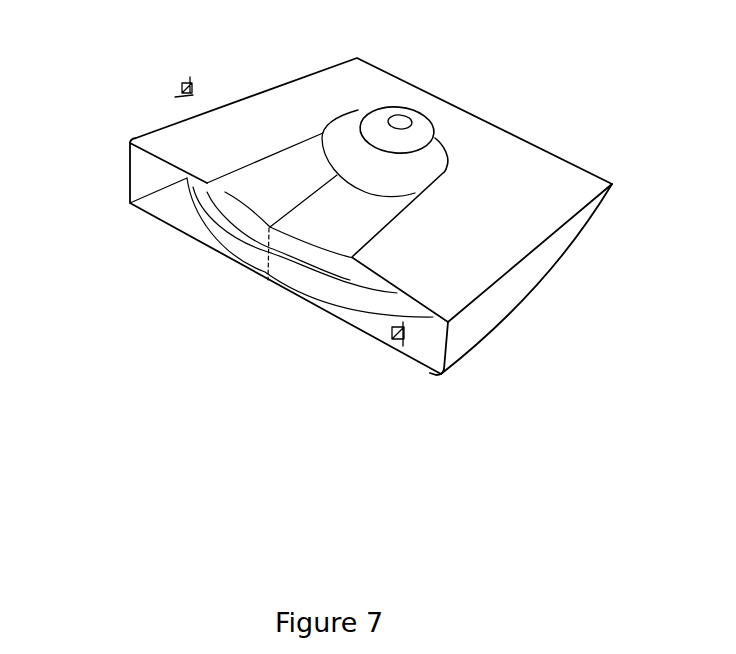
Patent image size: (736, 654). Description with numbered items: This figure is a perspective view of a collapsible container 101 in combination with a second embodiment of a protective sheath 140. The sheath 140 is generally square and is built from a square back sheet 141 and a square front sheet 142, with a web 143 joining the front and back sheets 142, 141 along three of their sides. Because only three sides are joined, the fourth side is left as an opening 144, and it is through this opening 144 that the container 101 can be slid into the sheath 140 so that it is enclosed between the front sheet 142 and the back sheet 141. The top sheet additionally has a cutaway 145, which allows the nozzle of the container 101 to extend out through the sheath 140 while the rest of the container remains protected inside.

The container 101 is at (374, 249).
The sheath 140 is at (183, 86).
The back sheet 141 is at (170, 212).
The front sheet 142 is at (512, 213).
The web 143 is at (493, 300).
The opening 144 is at (398, 328).
The cutaway 145 is at (347, 146).